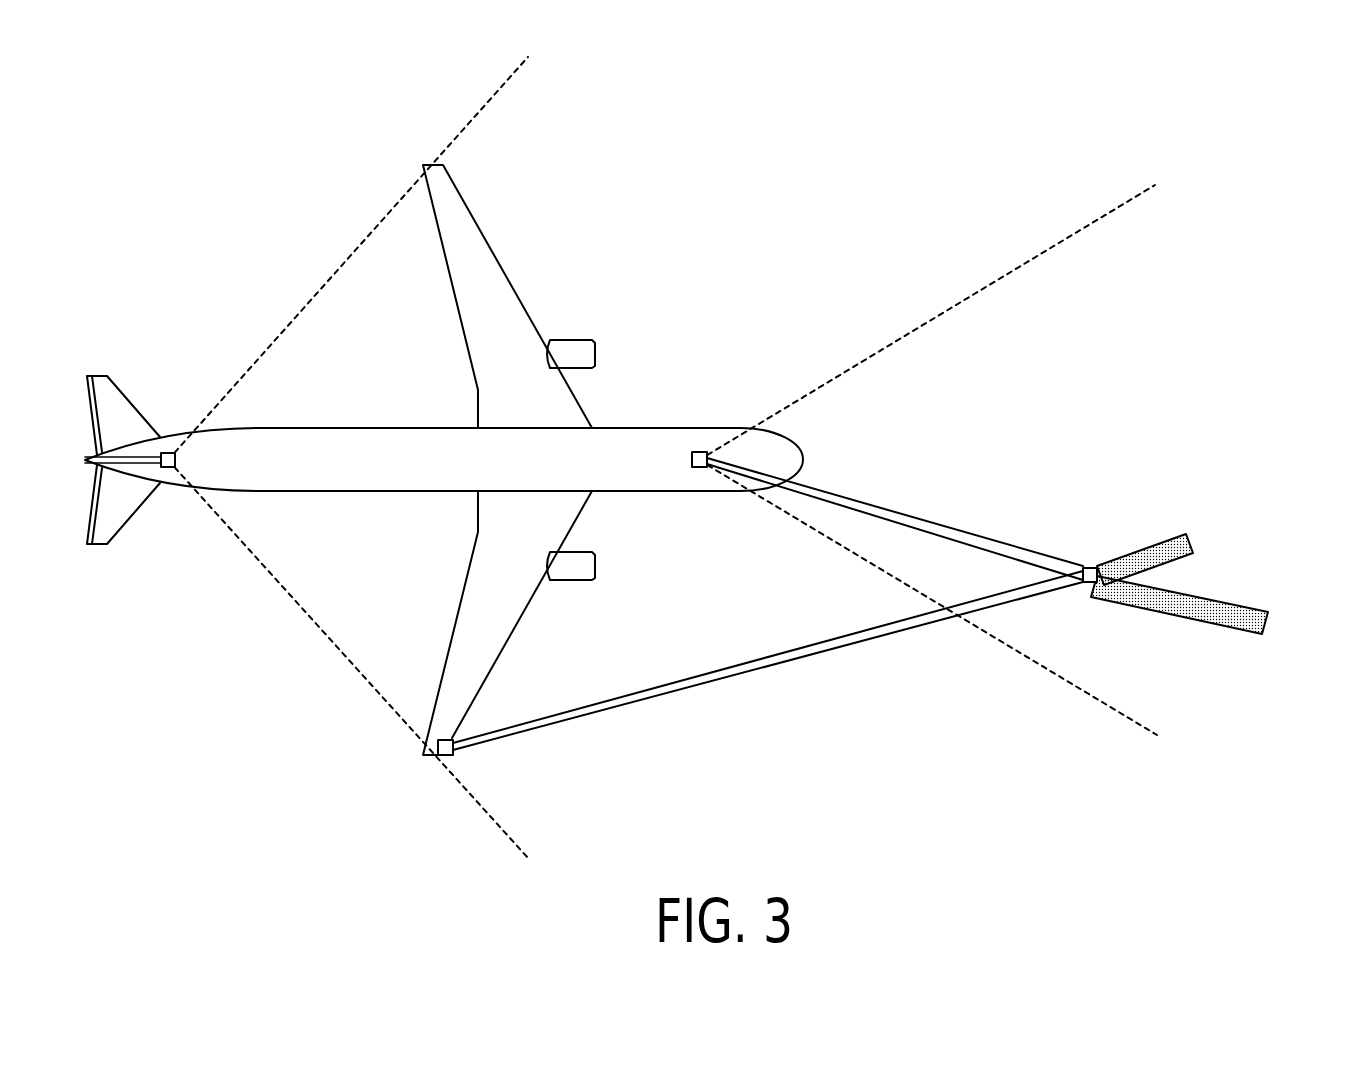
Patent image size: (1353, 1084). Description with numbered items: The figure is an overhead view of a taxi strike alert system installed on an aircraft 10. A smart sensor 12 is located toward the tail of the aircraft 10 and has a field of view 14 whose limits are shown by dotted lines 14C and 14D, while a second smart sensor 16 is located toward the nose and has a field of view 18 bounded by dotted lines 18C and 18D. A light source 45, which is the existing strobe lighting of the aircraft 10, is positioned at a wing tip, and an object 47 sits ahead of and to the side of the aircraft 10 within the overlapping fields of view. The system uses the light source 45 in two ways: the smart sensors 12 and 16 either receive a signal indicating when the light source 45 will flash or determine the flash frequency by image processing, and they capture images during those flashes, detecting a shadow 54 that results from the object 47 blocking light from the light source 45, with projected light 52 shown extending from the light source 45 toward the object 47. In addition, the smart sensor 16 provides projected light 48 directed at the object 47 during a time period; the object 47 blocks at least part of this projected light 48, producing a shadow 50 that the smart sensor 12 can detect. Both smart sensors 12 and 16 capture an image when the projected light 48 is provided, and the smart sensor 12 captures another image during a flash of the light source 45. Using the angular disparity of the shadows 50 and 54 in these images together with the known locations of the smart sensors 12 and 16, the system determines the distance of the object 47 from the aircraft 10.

The aircraft 10 is at (266, 157).
The smart sensor 12 is at (167, 468).
The field of view 14 is at (382, 543).
The dotted line 14C is at (307, 310).
The dotted line 14D is at (318, 622).
The smart sensor 16 is at (700, 468).
The field of view 18 is at (958, 386).
The dotted line 18C is at (820, 390).
The dotted line 18D is at (832, 535).
The light source 45 is at (442, 756).
The object 47 is at (1090, 583).
The projected light 48 is at (992, 533).
The shadow 50 is at (1258, 635).
The projected light 52 is at (718, 682).
The shadow 54 is at (1187, 532).